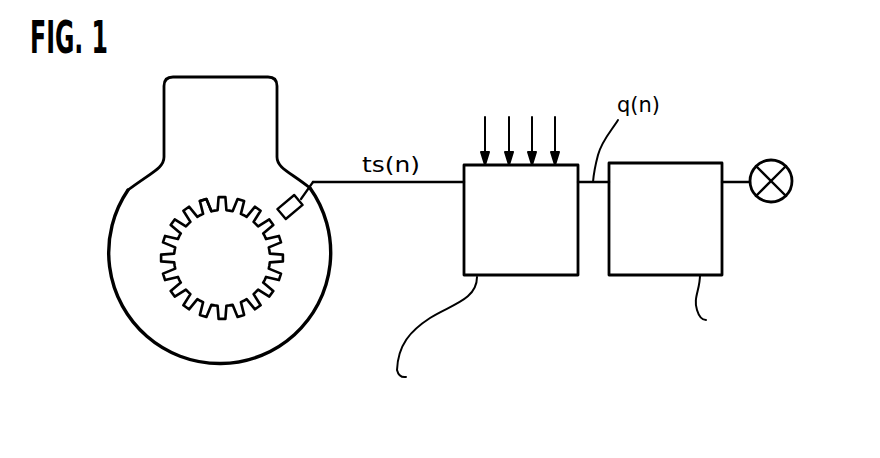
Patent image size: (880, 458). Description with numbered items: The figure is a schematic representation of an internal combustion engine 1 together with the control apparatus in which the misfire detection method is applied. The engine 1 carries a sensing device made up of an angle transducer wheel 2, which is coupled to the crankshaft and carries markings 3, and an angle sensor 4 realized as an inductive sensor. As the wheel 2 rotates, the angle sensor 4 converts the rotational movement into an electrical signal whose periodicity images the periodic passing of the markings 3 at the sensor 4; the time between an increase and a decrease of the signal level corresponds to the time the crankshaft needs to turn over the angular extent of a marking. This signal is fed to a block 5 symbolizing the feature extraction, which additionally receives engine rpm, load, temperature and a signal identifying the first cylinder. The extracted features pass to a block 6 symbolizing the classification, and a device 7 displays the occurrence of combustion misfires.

The internal combustion engine 1 is at (210, 92).
The angle transducer wheel 2 is at (162, 268).
The markings 3 is at (180, 213).
The angle sensor 4 is at (297, 208).
The block symbolizing the feature extraction 5 is at (524, 265).
The block symbolizing the classification 6 is at (665, 265).
The device for displaying the occurrence of combustion misfires 7 is at (768, 160).